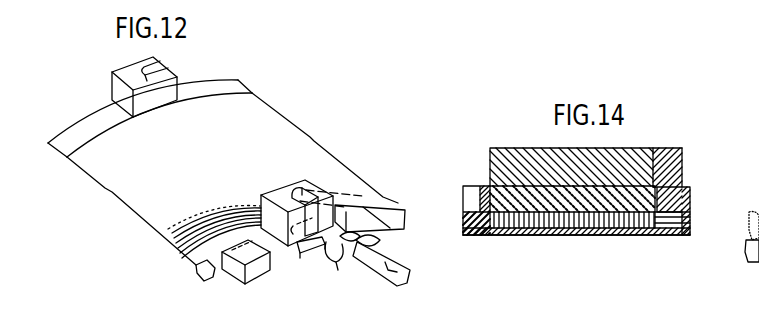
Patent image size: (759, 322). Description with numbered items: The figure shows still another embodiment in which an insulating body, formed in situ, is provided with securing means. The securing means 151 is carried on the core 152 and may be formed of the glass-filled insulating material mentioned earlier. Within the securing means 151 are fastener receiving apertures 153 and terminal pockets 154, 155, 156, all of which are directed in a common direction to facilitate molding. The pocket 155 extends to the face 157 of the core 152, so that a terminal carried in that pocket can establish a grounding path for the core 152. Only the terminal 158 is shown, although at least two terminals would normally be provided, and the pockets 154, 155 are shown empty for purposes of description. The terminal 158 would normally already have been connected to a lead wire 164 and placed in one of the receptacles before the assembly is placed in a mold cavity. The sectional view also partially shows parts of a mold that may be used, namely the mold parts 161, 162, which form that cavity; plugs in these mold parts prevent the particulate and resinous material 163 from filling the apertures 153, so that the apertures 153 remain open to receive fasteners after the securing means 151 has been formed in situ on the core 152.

In FIG. 12, the securing means 151 is at (173, 65).
In FIG. 14, the securing means 151 is at (670, 238).
In FIG. 12, the core 152 is at (290, 128).
In FIG. 14, the core 152 is at (566, 219).
In FIG. 12, the fastener receiving apertures 153 is at (140, 72).
In FIG. 14, the fastener receiving apertures 153 is at (471, 185).
In FIG. 12, the terminal pocket 154 is at (266, 262).
In FIG. 12, the terminal pocket 155 is at (313, 252).
In FIG. 14, the terminal pocket 155 is at (691, 224).
In FIG. 12, the terminal pocket 156 is at (388, 237).
In FIG. 12, the face 157 is at (200, 273).
In FIG. 14, the face 157 is at (753, 259).
In FIG. 12, the terminal 158 is at (399, 281).
In FIG. 14, the mold part 161 is at (512, 147).
In FIG. 14, the mold part 162 is at (681, 169).
In FIG. 14, the particulate and resinous material 163 is at (601, 230).
In FIG. 12, the lead wire 164 is at (338, 266).